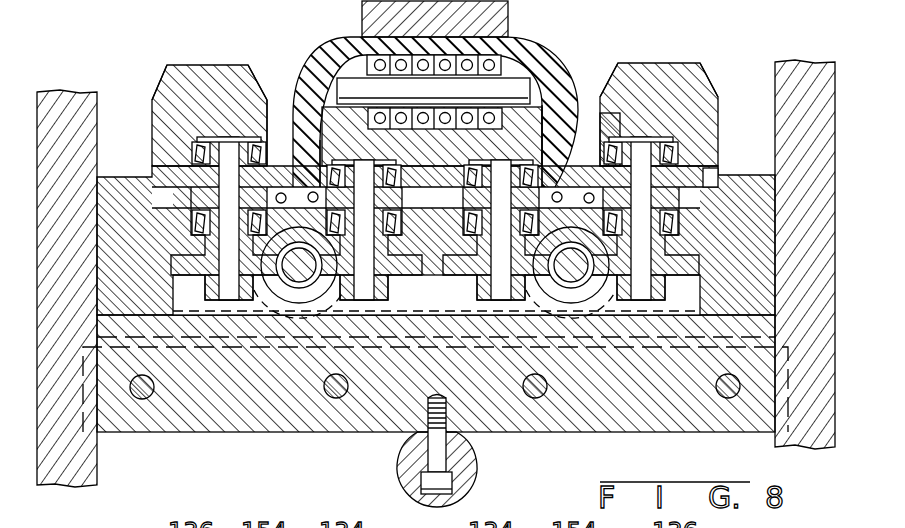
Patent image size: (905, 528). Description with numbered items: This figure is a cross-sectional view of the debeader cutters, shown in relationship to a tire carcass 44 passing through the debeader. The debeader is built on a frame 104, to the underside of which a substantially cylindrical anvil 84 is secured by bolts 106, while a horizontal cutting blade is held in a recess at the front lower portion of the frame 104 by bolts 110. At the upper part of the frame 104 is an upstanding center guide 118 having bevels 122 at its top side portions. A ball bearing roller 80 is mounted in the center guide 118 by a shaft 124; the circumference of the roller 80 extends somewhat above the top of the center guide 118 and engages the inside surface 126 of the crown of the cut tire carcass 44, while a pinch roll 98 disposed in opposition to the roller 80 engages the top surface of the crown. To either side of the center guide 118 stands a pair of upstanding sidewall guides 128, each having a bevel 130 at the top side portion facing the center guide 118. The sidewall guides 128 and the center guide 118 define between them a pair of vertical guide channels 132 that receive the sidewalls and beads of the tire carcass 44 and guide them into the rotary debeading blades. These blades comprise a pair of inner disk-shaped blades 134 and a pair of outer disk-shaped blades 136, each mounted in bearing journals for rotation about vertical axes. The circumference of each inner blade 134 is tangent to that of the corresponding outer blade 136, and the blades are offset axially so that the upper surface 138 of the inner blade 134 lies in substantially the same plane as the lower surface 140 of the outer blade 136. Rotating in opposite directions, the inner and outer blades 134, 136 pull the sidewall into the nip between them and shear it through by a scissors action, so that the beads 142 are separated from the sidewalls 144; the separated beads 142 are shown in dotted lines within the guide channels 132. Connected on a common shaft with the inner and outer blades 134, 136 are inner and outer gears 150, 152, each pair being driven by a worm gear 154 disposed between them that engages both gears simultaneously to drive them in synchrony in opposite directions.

The tire carcass 44 is at (570, 80).
The ball bearing roller 80 is at (527, 55).
The anvil 84 is at (476, 466).
The pinch roll 98 is at (508, 15).
The frame 104 is at (835, 212).
The bolts 106 is at (443, 494).
The bolts 110 is at (150, 398).
The center guide 118 is at (606, 118).
The bevels 122 is at (350, 108).
The shaft 124 is at (358, 110).
The inside surface 126 is at (340, 82).
The sidewall guides 128 is at (188, 64).
The bevel 130 is at (263, 87).
The vertical guide channels 132 is at (283, 140).
The inner disk-shaped blades 134 is at (428, 188).
The outer disk-shaped blades 136 is at (172, 170).
The upper surface 138 is at (603, 135).
The lower surface 140 is at (697, 187).
The beads 142 is at (276, 198).
The sidewalls 144 is at (265, 135).
The inner gears 150 is at (403, 276).
The outer gears 152 is at (188, 285).
The worm gear 154 is at (295, 290).